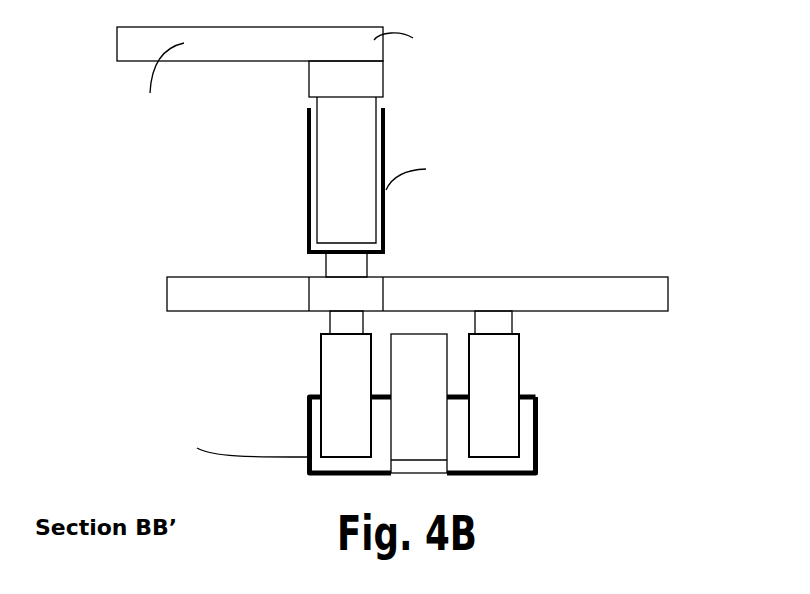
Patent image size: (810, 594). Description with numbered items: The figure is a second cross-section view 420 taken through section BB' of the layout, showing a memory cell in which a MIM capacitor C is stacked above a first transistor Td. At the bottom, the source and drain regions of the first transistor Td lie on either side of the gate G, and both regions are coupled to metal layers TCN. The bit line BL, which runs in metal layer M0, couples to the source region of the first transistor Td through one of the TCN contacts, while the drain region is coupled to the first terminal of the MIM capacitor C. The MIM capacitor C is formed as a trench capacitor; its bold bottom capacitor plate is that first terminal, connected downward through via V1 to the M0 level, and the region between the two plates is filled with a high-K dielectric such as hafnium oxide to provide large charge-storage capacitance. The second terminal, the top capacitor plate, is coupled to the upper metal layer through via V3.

The second cross-section view 420 is at (445, 249).
The via V3 is at (346, 79).
The MIM capacitor C is at (358, 152).
The via V1 is at (346, 264).
The metal layer M0 is at (417, 294).
The first transistor Td is at (458, 403).
The gate G is at (419, 403).
The metal layers TCN is at (420, 395).